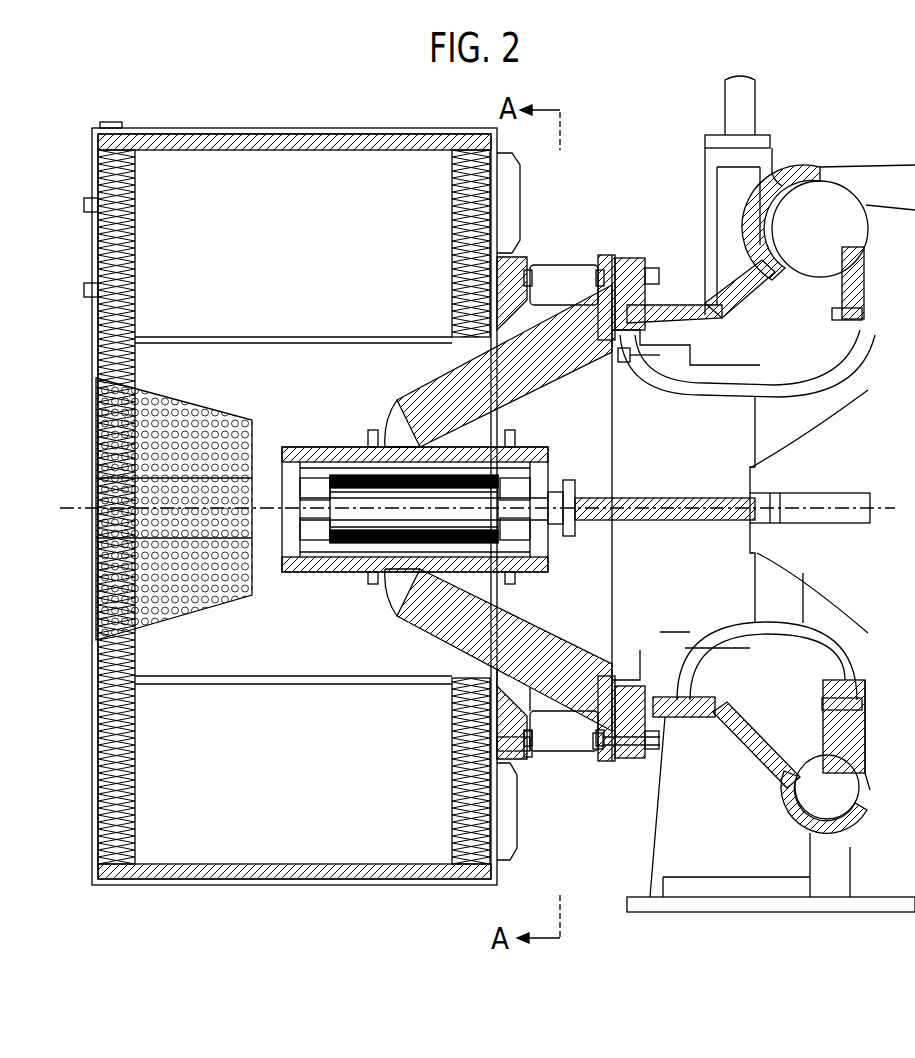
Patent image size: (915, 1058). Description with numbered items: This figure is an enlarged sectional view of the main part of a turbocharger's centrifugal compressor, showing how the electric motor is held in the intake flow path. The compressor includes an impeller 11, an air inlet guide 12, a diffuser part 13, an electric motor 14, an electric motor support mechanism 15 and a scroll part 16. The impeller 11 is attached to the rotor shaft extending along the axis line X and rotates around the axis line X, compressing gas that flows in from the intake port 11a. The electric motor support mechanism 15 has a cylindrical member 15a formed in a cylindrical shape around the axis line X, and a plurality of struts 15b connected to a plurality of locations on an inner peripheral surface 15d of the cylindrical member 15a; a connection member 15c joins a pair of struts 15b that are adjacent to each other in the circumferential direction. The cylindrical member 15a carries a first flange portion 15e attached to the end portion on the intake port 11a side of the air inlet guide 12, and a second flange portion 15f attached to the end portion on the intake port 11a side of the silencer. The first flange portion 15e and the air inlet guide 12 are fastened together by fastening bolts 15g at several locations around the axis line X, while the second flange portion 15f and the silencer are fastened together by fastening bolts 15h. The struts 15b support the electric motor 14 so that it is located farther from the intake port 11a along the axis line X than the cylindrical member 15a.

The impeller 11 is at (740, 545).
The intake port 11a is at (740, 450).
The air inlet guide 12 is at (703, 690).
The diffuser part 13 is at (838, 300).
The electric motor 14 is at (300, 582).
The electric motor support mechanism 15 is at (575, 240).
The cylindrical member 15a is at (567, 765).
The struts 15b is at (528, 383).
The connection member 15c is at (400, 420).
The inner peripheral surface 15d is at (594, 352).
The first flange portion 15e is at (590, 770).
The second flange portion 15f is at (522, 757).
The fastening bolts 15g is at (633, 762).
The fastening bolts 15h is at (519, 725).
The scroll part 16 is at (823, 165).
The axis line X is at (826, 500).